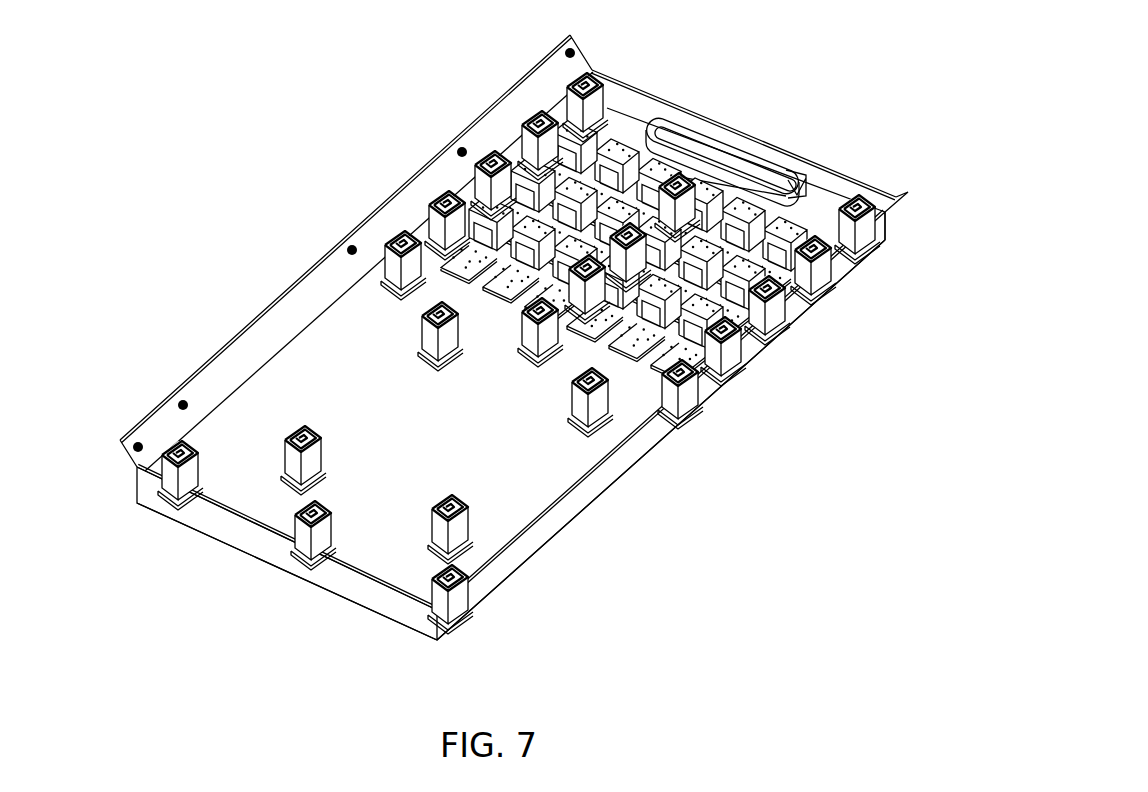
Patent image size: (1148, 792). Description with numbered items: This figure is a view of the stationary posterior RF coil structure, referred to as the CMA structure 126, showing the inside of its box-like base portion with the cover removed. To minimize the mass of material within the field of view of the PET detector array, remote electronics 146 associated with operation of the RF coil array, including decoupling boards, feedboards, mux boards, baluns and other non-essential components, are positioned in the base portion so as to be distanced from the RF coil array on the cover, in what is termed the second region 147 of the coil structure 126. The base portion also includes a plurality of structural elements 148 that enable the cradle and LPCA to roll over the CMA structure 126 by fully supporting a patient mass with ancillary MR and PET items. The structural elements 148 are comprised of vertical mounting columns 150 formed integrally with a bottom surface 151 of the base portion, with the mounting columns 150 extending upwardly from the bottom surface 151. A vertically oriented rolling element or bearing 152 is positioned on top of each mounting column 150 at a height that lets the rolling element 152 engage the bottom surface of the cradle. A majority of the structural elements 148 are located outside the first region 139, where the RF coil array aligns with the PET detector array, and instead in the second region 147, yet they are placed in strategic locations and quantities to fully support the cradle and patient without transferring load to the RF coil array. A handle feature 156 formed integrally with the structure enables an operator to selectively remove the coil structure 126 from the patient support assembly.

The CMA structure 126 is at (778, 36).
The first region 139 is at (150, 392).
The remote electronics 146 is at (520, 180).
The second region 147 is at (881, 279).
The structural elements 148 is at (625, 130).
The vertical mounting columns 150 is at (596, 100).
The bottom surface 151 is at (452, 445).
The rolling element 152 is at (591, 64).
The handle feature 156 is at (744, 138).